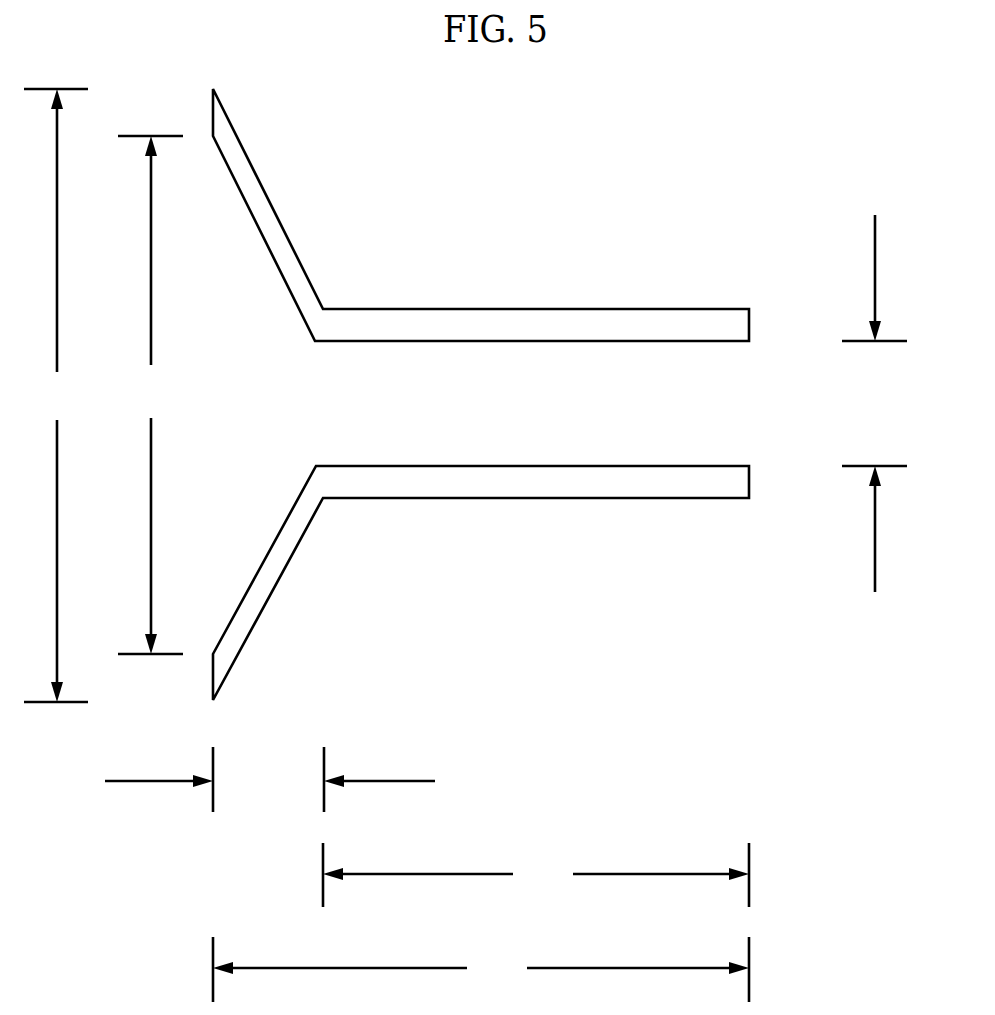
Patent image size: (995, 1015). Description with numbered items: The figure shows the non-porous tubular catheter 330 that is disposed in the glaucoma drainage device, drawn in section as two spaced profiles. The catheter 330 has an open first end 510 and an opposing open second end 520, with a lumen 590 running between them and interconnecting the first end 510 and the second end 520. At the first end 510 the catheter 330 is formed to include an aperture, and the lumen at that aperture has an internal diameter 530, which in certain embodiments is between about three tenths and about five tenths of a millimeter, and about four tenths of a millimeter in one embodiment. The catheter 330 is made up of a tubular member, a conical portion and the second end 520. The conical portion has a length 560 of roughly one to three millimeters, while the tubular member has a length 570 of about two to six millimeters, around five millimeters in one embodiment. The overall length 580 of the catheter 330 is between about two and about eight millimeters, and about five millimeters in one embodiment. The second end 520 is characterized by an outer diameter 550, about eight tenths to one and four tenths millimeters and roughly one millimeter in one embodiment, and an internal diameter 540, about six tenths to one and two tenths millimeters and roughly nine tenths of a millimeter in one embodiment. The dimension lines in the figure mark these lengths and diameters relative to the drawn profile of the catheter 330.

The catheter 330 is at (488, 388).
The first end 510 is at (749, 512).
The second end 520 is at (213, 89).
The internal diameter 530 is at (874, 403).
The internal diameter 540 is at (150, 395).
The outer diameter 550 is at (56, 395).
The length 560 is at (270, 779).
The length 570 is at (536, 875).
The length 580 is at (481, 969).
The lumen 590 is at (453, 411).